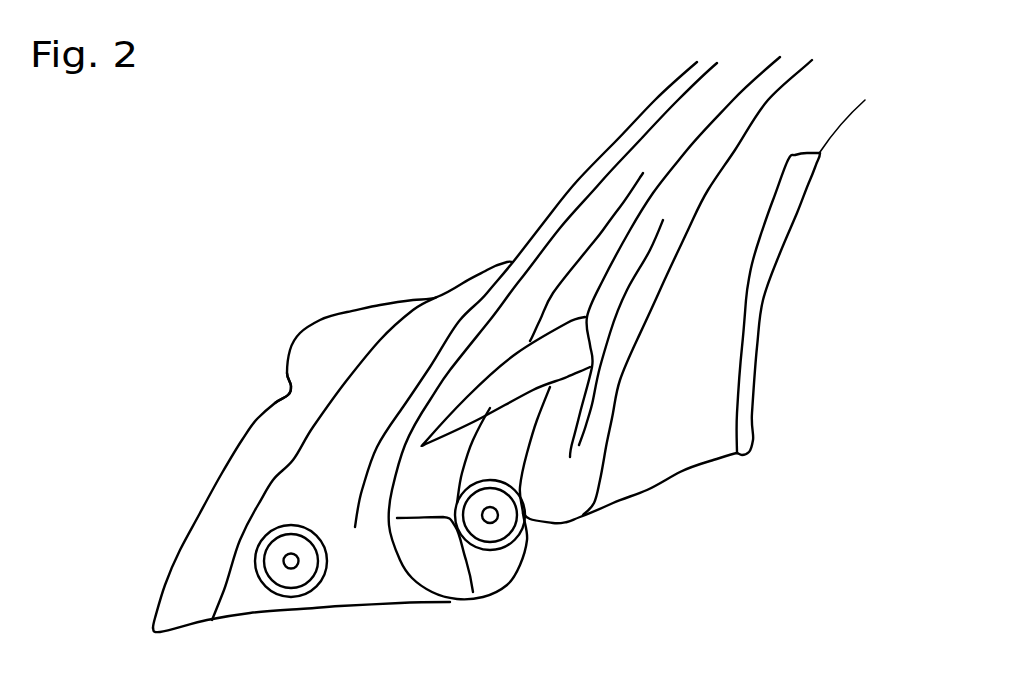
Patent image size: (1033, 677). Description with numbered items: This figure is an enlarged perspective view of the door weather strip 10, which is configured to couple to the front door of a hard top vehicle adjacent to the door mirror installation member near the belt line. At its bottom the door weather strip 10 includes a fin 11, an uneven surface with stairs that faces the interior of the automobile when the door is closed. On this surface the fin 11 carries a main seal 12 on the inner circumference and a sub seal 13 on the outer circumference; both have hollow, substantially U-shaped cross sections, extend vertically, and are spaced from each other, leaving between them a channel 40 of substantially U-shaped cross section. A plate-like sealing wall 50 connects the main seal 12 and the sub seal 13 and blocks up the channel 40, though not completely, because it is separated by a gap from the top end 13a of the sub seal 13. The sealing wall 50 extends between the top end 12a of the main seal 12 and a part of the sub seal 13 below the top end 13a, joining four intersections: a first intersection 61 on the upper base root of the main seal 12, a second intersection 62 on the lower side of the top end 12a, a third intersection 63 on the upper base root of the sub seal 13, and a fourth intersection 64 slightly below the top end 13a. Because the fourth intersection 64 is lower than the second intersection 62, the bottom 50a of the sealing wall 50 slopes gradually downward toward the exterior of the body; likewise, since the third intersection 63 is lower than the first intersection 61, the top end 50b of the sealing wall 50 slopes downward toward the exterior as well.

The door weather strip 10 is at (609, 104).
The fin 11 is at (310, 482).
The main seal 12 is at (583, 468).
The top end of the main seal 12a is at (585, 421).
The sub seal 13 is at (440, 372).
The top end of the sub seal 13a is at (417, 422).
The channel 40 is at (500, 453).
The sealing wall 50 is at (491, 383).
The bottom of the sealing wall 50a is at (507, 407).
The top end of the sealing wall 50b is at (570, 322).
The first intersection 61 is at (585, 320).
The second intersection 62 is at (590, 368).
The third intersection 63 is at (537, 334).
The fourth intersection 64 is at (378, 445).